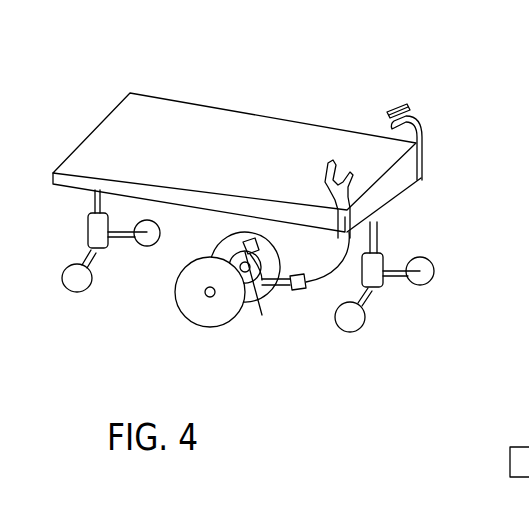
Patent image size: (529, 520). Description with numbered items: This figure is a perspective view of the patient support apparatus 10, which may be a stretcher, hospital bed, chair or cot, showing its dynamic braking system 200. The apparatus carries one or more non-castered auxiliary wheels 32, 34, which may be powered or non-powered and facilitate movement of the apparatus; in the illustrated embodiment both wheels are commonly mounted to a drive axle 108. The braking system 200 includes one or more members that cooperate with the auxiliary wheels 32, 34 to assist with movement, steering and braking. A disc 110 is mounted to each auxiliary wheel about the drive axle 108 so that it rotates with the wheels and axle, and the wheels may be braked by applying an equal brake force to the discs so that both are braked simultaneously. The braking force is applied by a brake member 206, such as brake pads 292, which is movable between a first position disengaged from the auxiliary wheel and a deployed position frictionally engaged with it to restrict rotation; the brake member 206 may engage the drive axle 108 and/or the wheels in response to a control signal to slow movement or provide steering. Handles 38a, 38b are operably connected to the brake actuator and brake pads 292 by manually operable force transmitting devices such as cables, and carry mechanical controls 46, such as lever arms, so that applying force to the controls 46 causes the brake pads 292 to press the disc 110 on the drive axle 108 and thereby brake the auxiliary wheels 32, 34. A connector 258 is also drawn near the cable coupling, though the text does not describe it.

The patient support apparatus 10 is at (237, 60).
The dynamic braking system 200 is at (394, 307).
The auxiliary wheel 34 is at (176, 297).
The auxiliary wheel 32 is at (226, 243).
The disc 110 is at (232, 240).
The brake pads 292 is at (233, 238).
The drive axle 108 is at (262, 315).
The connector 258 is at (302, 293).
The brake member 206 is at (253, 229).
The handle 38a is at (348, 201).
The handle 38b is at (422, 128).
The mechanical controls 46 is at (386, 106).